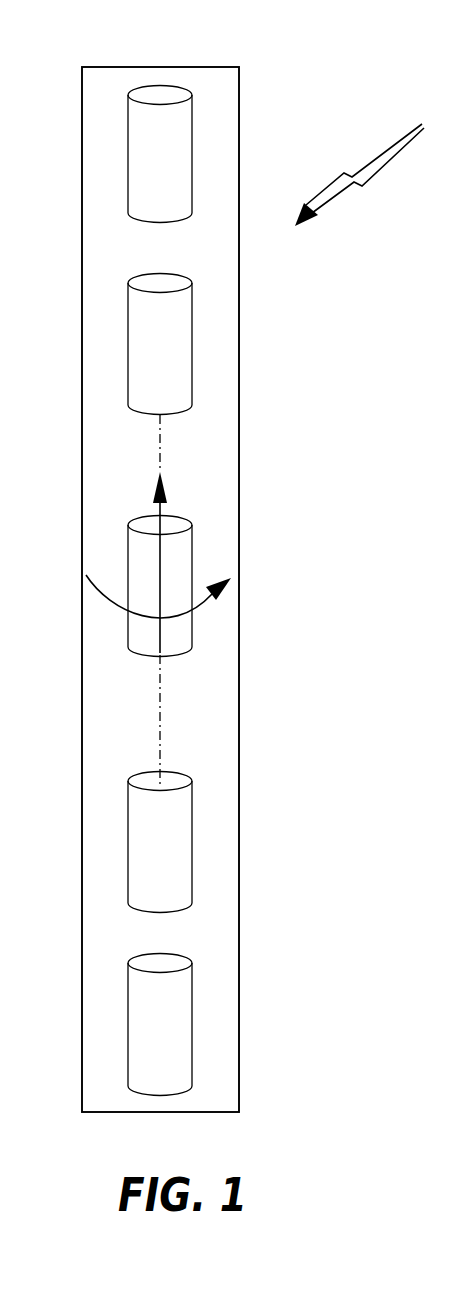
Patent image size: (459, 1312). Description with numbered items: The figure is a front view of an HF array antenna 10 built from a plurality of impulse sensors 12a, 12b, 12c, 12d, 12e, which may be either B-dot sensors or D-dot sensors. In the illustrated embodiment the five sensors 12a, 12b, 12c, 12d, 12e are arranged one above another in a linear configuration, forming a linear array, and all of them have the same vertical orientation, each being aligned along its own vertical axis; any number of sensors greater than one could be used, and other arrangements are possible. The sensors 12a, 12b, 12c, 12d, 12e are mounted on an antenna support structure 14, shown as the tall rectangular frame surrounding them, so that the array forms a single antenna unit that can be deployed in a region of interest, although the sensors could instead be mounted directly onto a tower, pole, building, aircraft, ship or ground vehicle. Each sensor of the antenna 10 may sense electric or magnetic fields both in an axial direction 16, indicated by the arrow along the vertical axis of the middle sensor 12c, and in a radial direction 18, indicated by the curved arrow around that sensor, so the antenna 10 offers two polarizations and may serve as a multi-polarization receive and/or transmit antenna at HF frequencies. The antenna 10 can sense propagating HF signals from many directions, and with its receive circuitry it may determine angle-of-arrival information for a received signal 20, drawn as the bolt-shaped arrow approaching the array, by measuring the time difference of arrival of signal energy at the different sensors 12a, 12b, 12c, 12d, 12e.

The HF array antenna 10 is at (99, 45).
The impulse sensor 12a is at (153, 148).
The impulse sensor 12b is at (153, 338).
The impulse sensor 12c is at (153, 552).
The impulse sensor 12d is at (153, 835).
The impulse sensor 12e is at (153, 1018).
The antenna support structure 14 is at (224, 295).
The axial direction 16 is at (190, 538).
The radial direction 18 is at (177, 616).
The received signal 20 is at (362, 187).